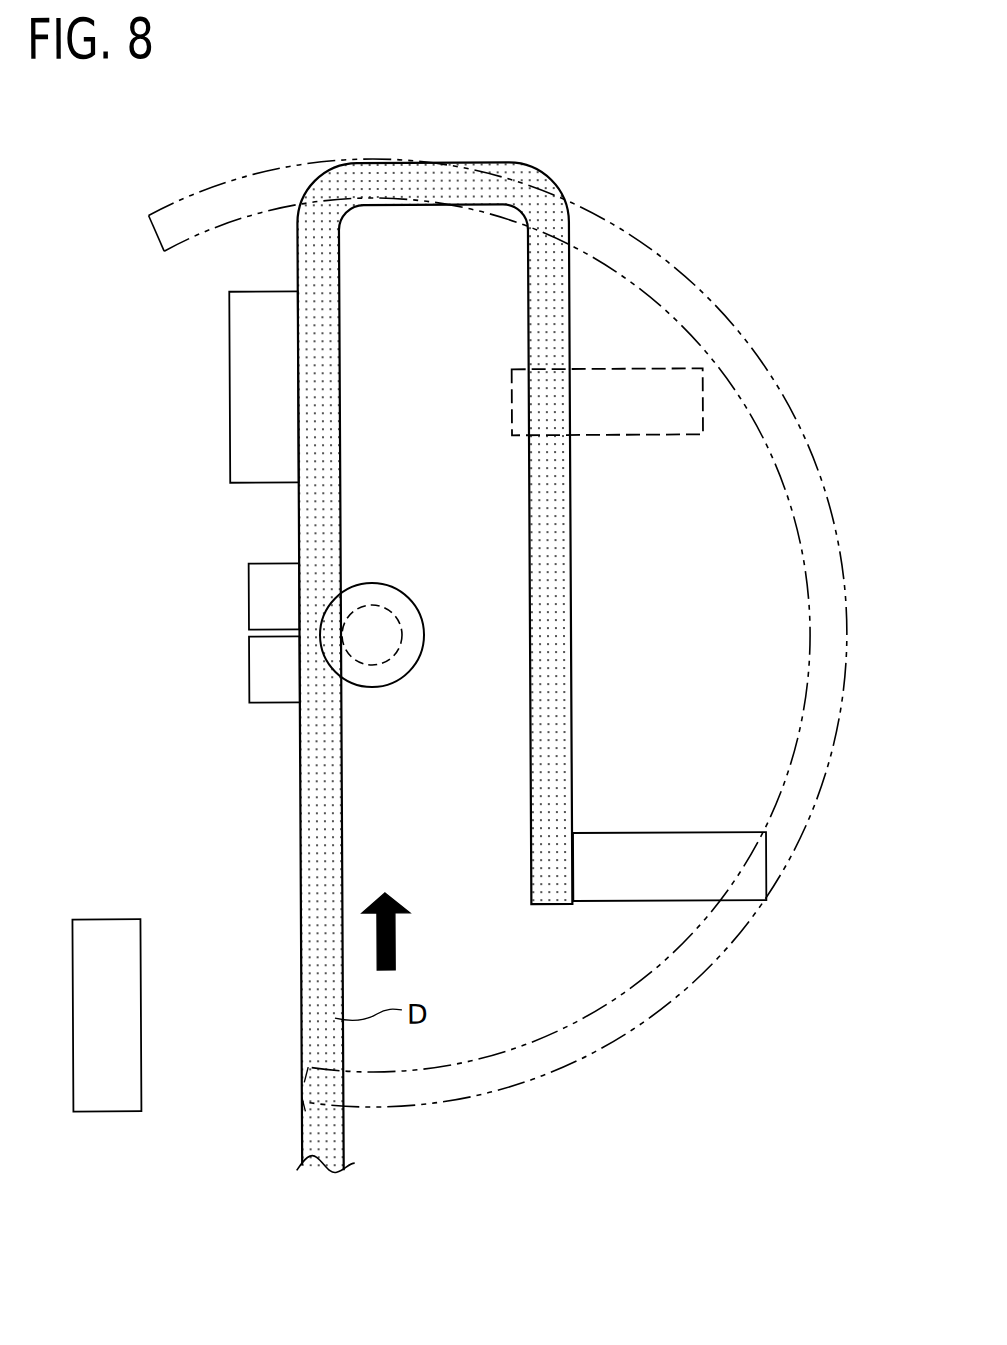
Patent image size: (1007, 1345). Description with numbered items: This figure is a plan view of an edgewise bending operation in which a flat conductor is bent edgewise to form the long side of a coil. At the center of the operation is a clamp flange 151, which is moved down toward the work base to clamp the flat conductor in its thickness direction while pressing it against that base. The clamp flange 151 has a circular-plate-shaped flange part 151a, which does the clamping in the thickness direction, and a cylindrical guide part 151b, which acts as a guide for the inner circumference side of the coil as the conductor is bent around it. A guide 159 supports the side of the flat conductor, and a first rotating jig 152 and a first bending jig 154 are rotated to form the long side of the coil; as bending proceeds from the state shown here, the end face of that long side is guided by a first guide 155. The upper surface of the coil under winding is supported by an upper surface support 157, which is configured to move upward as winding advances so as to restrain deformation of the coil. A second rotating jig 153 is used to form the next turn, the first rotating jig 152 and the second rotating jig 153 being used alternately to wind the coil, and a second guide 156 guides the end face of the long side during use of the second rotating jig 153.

The clamp flange 151 is at (417, 607).
The flange part 151a is at (412, 598).
The guide part 151b is at (398, 660).
The first rotating jig 152 is at (241, 408).
The second rotating jig 153 is at (611, 436).
The first bending jig 154 is at (259, 592).
The first guide 155 is at (680, 842).
The second guide 156 is at (131, 966).
The upper surface support 157 is at (631, 237).
The guide 159 is at (259, 672).